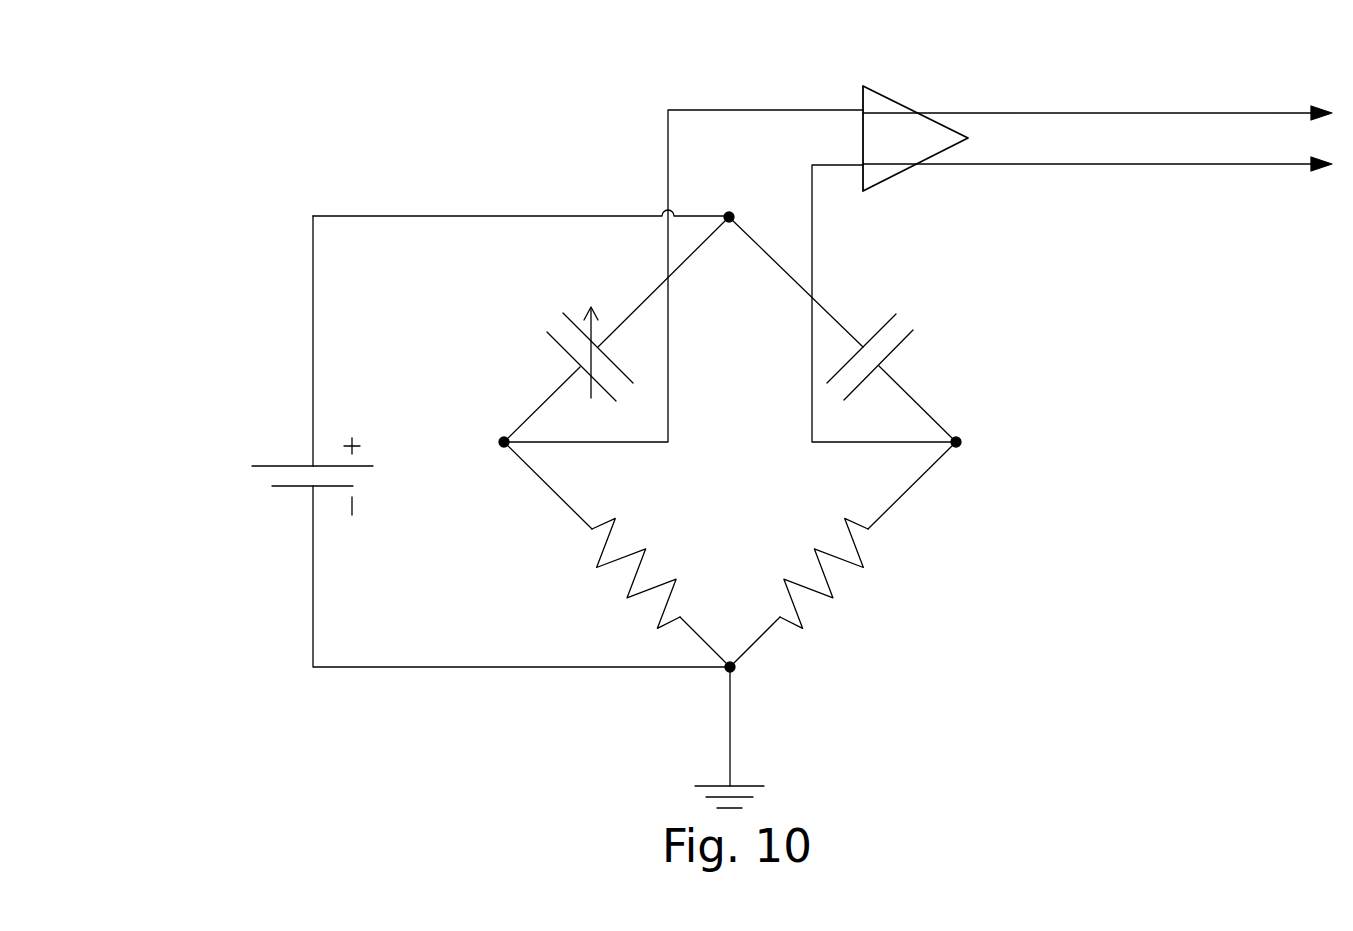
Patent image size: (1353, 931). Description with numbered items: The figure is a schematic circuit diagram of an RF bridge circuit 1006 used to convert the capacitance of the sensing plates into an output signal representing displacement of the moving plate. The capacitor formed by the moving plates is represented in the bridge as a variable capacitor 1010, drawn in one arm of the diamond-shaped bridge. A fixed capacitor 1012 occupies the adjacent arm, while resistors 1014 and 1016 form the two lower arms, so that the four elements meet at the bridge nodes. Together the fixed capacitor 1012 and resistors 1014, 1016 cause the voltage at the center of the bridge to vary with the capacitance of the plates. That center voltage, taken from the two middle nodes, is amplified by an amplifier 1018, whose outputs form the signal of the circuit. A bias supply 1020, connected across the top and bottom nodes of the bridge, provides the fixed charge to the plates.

The RF bridge circuit 1006 is at (561, 435).
The variable capacitor 1010 is at (540, 345).
The fixed capacitor 1012 is at (945, 352).
The resistor 1014 is at (896, 573).
The resistor 1016 is at (588, 573).
The amplifier 1018 is at (1097, 106).
The bias supply 1020 is at (260, 476).